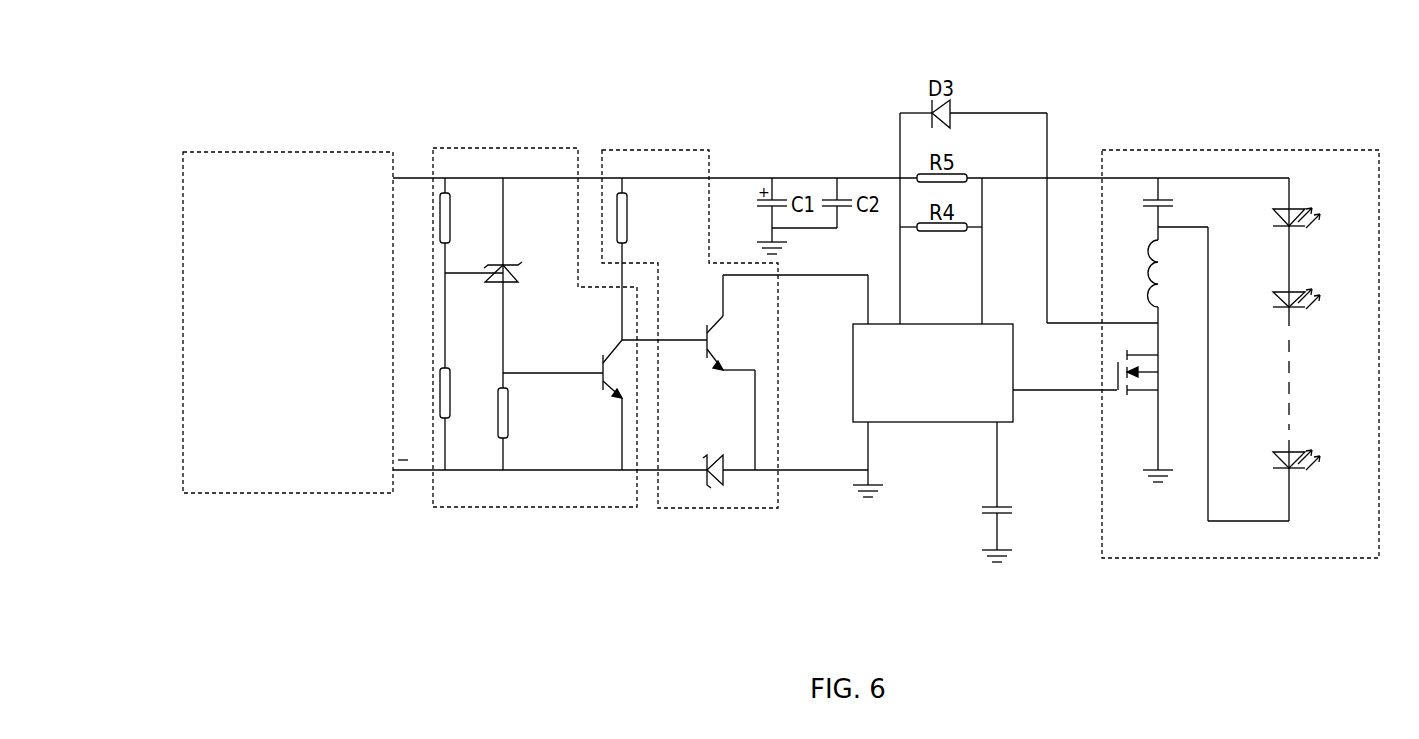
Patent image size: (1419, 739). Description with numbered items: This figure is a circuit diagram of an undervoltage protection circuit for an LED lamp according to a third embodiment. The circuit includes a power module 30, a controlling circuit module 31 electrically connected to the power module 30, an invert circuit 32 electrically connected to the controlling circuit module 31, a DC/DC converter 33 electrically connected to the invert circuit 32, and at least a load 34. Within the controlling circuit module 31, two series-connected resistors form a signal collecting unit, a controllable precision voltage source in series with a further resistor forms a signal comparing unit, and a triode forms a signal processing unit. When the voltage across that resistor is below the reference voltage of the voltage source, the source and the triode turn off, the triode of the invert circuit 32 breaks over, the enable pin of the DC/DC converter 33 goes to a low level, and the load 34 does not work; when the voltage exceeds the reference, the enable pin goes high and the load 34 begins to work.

The power module 30 is at (283, 172).
The controlling circuit module 31 is at (505, 148).
The invert circuit 32 is at (672, 150).
The DC/DC converter 33 is at (937, 422).
The load 34 is at (1157, 558).